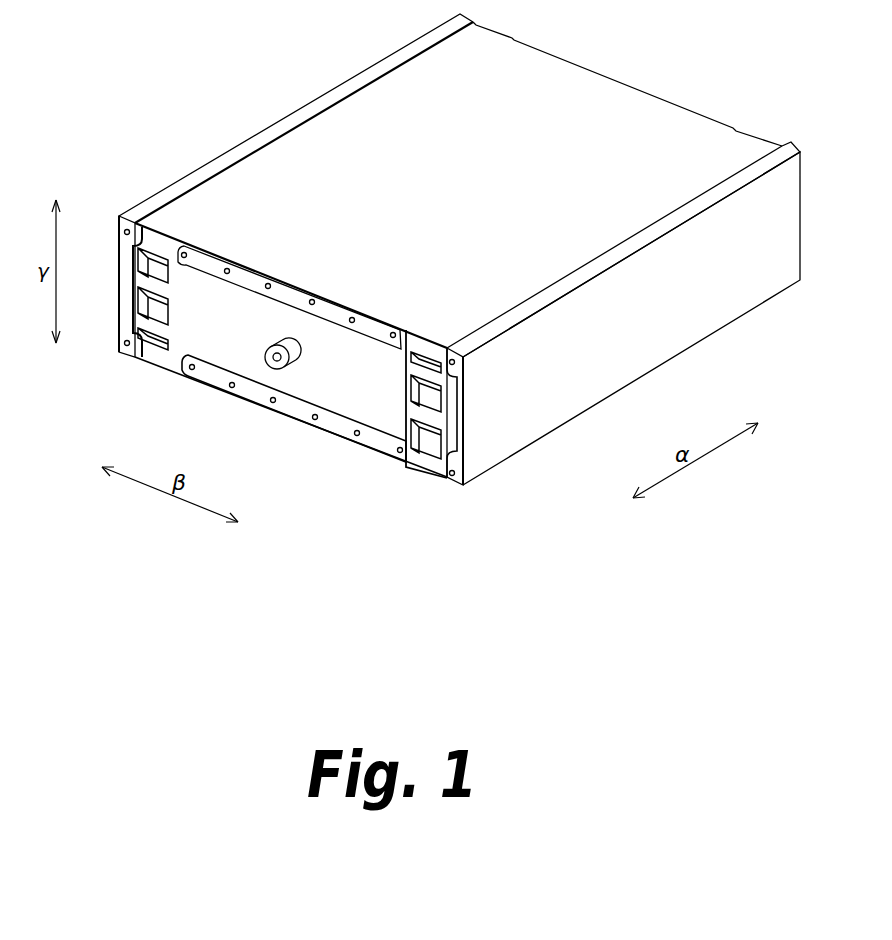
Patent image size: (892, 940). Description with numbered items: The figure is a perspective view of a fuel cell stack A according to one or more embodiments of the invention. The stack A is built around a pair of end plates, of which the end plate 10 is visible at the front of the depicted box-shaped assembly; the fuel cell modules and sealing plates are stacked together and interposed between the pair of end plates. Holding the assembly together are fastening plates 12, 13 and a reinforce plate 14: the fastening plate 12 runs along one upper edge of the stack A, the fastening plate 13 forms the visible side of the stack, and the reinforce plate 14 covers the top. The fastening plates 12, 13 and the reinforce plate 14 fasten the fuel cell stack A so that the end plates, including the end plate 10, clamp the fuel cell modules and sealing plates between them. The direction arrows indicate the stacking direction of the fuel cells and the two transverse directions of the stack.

The fuel cell stack A is at (260, 111).
The end plate 10 is at (327, 400).
The fastening plate 12 is at (158, 193).
The fastening plate 13 is at (683, 337).
The reinforce plate 14 is at (373, 117).